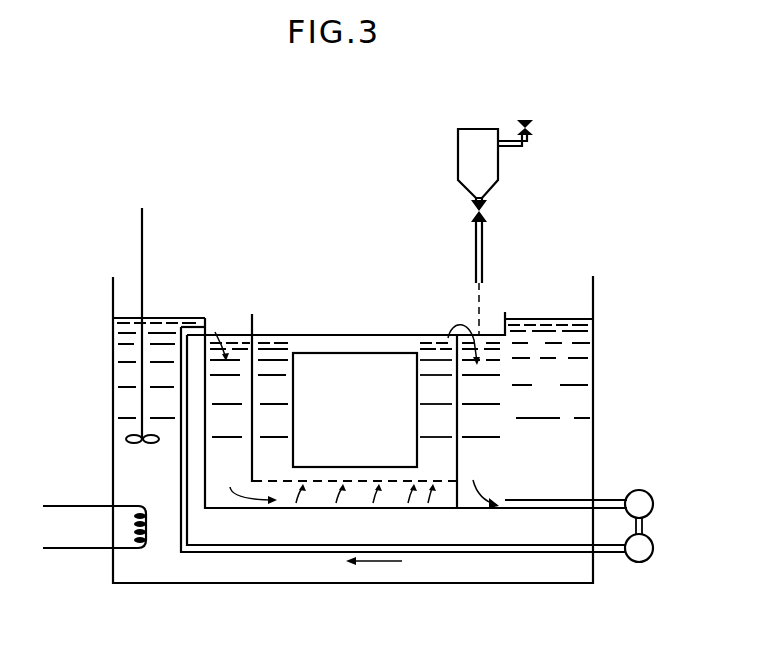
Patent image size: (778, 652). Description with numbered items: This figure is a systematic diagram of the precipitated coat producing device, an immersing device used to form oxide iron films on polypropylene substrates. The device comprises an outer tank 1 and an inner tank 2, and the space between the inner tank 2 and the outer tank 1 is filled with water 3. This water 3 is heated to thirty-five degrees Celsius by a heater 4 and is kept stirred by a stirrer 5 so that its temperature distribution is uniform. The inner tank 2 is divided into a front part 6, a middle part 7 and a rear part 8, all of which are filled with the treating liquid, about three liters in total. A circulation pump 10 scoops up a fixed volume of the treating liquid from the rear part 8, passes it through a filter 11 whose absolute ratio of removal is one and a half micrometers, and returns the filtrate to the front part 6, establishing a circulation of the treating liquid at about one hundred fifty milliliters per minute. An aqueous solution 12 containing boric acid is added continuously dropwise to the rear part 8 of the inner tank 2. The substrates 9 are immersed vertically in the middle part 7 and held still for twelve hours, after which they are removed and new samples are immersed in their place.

The outer tank 1 is at (593, 347).
The inner tank 2 is at (505, 313).
The water 3 is at (585, 400).
The heater 4 is at (90, 548).
The stirrer 5 is at (133, 447).
The front part 6 is at (235, 363).
The middle part 7 is at (268, 365).
The rear part 8 is at (490, 455).
The substrates 9 is at (376, 367).
The circulation pump 10 is at (644, 491).
The filter 11 is at (637, 563).
The aqueous solution 12 is at (462, 160).